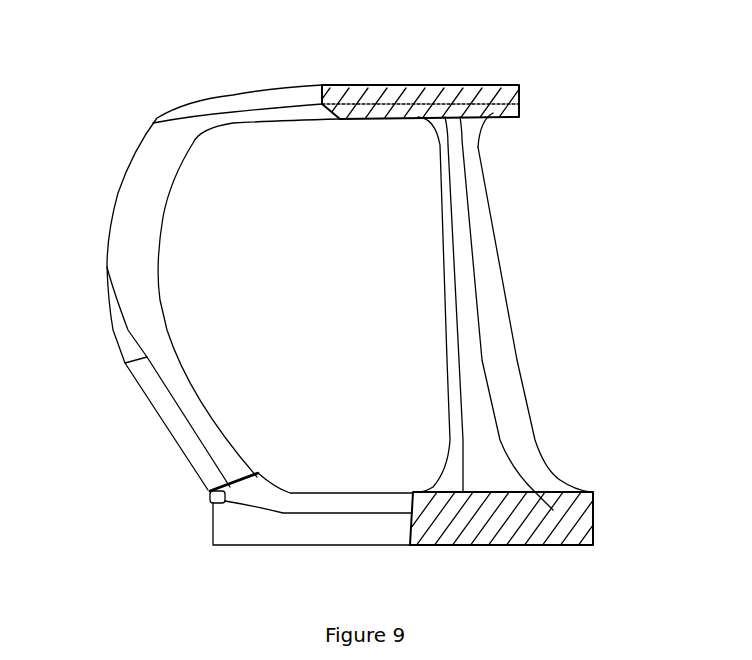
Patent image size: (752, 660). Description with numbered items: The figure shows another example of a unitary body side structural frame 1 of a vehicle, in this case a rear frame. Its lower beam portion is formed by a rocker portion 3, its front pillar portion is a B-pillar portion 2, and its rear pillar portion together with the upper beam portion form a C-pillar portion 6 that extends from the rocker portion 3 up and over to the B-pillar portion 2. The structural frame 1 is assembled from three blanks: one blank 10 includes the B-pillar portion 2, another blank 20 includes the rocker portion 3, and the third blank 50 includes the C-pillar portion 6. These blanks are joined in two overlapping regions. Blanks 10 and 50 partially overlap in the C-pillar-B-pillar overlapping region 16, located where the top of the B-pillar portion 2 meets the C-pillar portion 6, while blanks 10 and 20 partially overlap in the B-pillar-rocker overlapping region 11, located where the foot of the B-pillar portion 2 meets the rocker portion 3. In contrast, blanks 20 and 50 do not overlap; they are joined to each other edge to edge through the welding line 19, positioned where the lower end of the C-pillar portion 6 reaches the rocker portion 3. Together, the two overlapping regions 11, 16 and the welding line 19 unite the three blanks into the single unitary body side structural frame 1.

The unitary body side structural frame 1 is at (230, 63).
The B-pillar portion 2 is at (530, 245).
The rocker portion 3 is at (357, 561).
The C-pillar portion 6 is at (112, 143).
The blank 10 is at (513, 340).
The B-pillar-rocker overlapping region 11 is at (592, 513).
The C-pillar-B-pillar overlapping region 16 is at (497, 117).
The welding line 19 is at (210, 500).
The blank 20 is at (283, 532).
The blank 50 is at (122, 363).